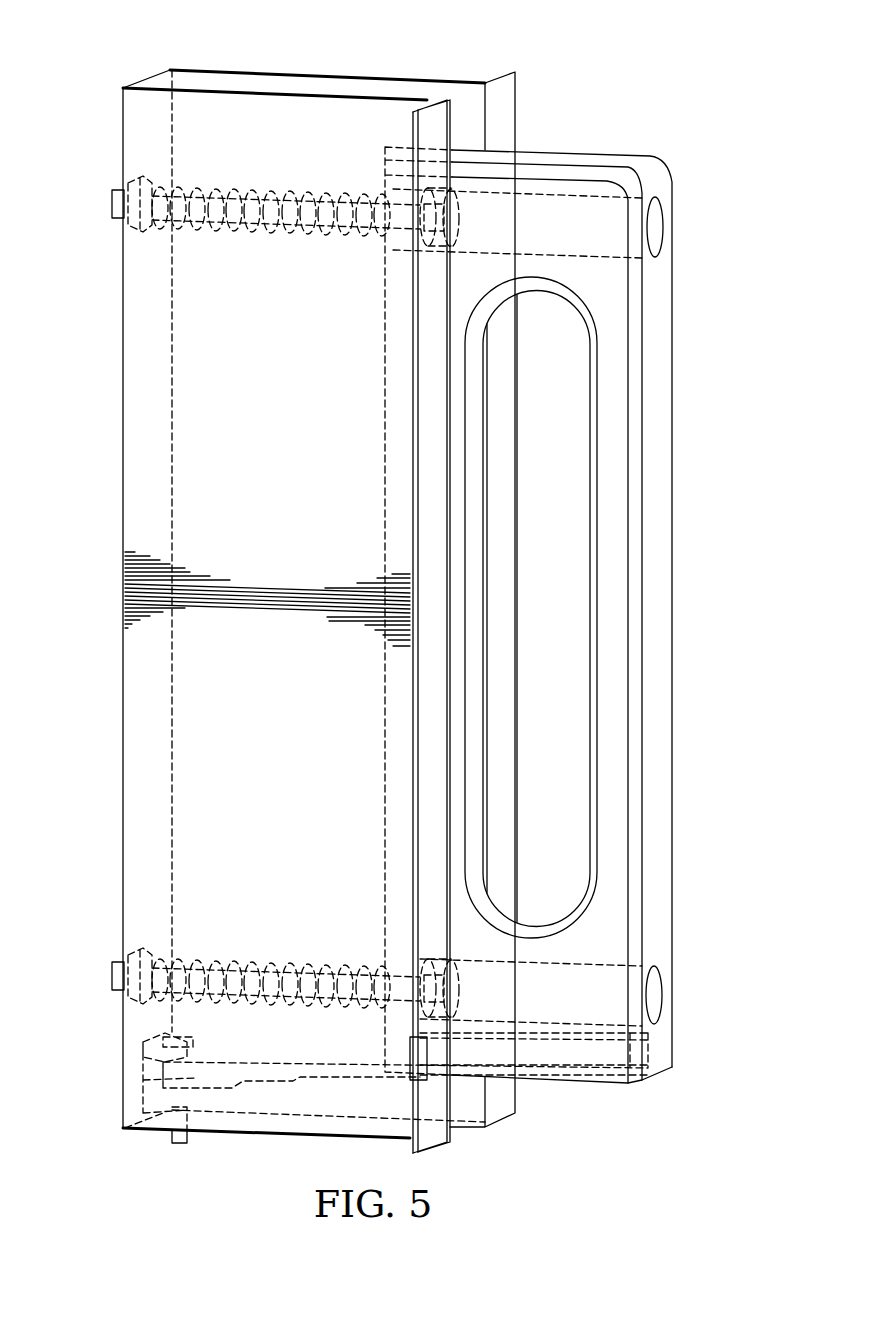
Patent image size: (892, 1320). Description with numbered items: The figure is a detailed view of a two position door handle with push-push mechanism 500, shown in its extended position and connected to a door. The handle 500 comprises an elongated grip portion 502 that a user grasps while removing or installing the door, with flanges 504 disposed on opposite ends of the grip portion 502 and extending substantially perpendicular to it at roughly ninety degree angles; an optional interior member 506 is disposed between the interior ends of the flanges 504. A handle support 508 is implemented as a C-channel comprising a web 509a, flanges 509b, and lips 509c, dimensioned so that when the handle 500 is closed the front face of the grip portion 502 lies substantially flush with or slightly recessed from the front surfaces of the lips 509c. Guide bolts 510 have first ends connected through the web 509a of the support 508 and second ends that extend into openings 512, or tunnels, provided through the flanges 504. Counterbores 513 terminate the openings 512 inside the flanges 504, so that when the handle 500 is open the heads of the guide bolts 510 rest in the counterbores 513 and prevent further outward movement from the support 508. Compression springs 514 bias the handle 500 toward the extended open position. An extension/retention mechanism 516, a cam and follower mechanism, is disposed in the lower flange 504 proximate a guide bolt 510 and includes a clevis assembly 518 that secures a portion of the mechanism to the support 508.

The two position door handle with push-push mechanism 500 is at (722, 334).
The grip portion 502 is at (617, 563).
The flanges 504 is at (585, 277).
The interior member 506 is at (455, 809).
The handle support 508 is at (303, 74).
The web 509a is at (145, 83).
The flanges 509b is at (218, 72).
The lips 509c is at (518, 95).
The guide bolts 510 is at (224, 190).
The openings 512 is at (652, 228).
The counterbores 513 is at (420, 242).
The compression springs 514 is at (253, 232).
The extension/retention mechanism 516 is at (262, 1092).
The clevis assembly 518 is at (134, 1093).